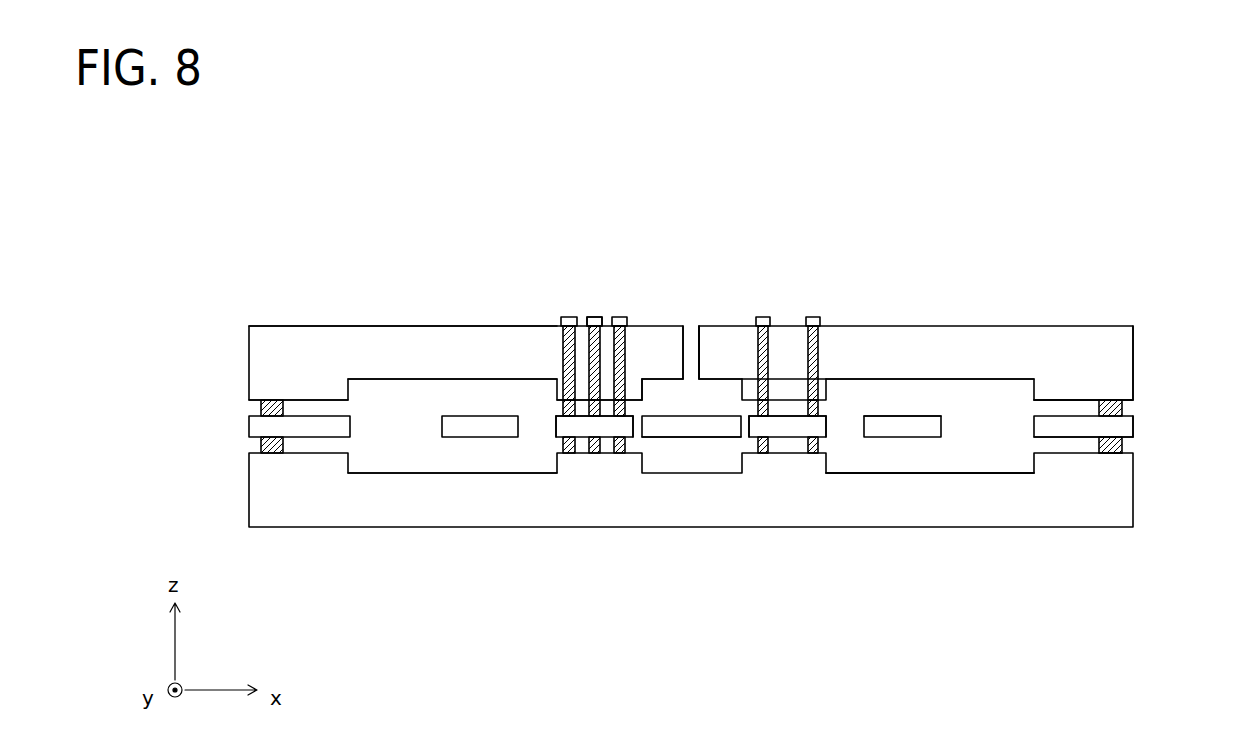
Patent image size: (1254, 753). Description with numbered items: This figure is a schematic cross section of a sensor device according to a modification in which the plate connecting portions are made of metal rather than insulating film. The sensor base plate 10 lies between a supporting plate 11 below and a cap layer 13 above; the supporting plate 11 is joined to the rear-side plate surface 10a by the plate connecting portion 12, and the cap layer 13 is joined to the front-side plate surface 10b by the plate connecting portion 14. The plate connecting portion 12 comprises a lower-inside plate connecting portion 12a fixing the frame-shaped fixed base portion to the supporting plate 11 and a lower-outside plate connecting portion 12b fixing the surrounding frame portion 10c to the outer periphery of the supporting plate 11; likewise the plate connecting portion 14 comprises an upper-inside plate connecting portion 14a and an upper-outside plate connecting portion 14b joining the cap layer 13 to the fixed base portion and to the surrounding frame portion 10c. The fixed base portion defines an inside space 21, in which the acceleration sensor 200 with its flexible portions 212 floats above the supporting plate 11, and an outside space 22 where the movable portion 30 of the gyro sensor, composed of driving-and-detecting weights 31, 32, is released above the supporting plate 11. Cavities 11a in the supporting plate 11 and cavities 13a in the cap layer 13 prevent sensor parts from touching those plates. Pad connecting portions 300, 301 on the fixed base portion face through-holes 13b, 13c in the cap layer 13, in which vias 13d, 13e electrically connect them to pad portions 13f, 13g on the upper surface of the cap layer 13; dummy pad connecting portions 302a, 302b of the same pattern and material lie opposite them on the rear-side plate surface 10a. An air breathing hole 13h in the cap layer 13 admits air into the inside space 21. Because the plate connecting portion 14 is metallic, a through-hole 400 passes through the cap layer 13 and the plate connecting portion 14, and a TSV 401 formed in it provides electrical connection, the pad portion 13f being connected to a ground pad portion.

The sensor base plate 10 is at (1148, 416).
The rear-side plate surface 10a is at (1125, 438).
The front-side plate surface 10b is at (1123, 399).
The surrounding frame portion 10c is at (1123, 428).
The supporting plate 11 is at (1063, 505).
The cavities 11a is at (975, 465).
The plate connecting portion 12 is at (1133, 457).
The lower-inside plate connecting portion 12a is at (590, 453).
The lower-outside plate connecting portion 12b is at (275, 453).
The cap layer 13 is at (1038, 338).
The cavities 13a is at (966, 378).
The through-hole 13b is at (563, 347).
The through-hole 13c is at (627, 345).
The via 13d is at (587, 318).
The via 13e is at (627, 330).
The pad portion 13f is at (563, 315).
The pad portion 13g is at (617, 317).
The air breathing hole 13h is at (718, 390).
The plate connecting portion 14 is at (1106, 408).
The upper-inside plate connecting portion 14a is at (789, 378).
The upper-outside plate connecting portion 14b is at (272, 400).
The inside space 21 is at (685, 350).
The outside space 22 is at (453, 465).
The movable portion 30 is at (918, 410).
The driving-and-detecting weight 31 is at (458, 415).
The driving-and-detecting weight 32 is at (873, 415).
The acceleration sensor 200 is at (708, 449).
The flexible portions 212 is at (672, 440).
The pad connecting portion 300 is at (492, 380).
The pad connecting portion 301 is at (630, 413).
The dummy pad connecting portion 302a is at (618, 453).
The dummy pad connecting portion 302b is at (565, 453).
The through-hole 400 is at (592, 318).
The TSV 401 is at (598, 316).